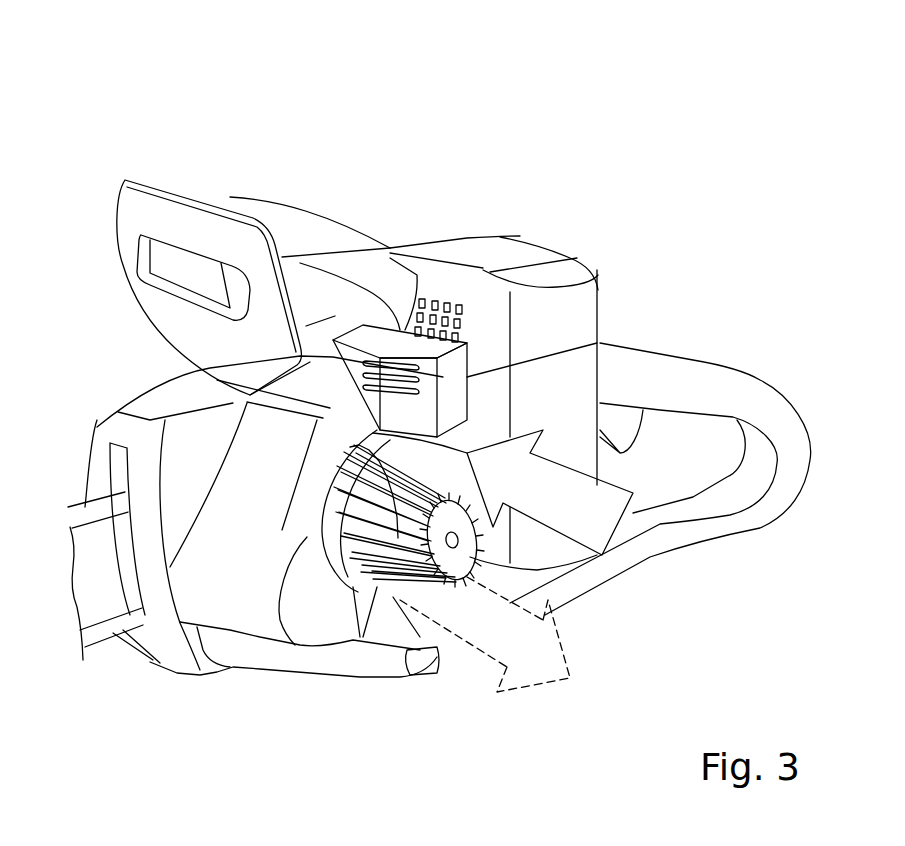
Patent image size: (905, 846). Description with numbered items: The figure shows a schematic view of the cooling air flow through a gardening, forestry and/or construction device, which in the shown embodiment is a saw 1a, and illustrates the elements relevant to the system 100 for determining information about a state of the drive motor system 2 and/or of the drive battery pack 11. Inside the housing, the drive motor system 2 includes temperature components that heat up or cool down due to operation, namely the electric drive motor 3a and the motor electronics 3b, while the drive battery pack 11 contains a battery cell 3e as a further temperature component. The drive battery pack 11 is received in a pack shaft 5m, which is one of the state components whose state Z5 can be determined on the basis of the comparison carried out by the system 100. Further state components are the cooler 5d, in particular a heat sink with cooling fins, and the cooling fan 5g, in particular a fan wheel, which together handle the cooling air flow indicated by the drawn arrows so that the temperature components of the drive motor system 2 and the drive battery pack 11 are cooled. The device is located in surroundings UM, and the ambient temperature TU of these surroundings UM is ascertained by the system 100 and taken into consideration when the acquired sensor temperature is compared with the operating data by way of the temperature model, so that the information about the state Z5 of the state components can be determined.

The system 100 is at (160, 153).
The saw 1a is at (233, 117).
The drive motor system 2 is at (505, 355).
The electric drive motor 3a is at (360, 560).
The motor electronics 3b is at (447, 300).
The battery cell 3e is at (570, 272).
The cooler 5d is at (383, 352).
The pack shaft 5m is at (465, 297).
The cooling fan 5g is at (400, 525).
The drive battery pack 11 is at (483, 268).
The state of a state component Z5 is at (520, 236).
The surroundings UM is at (732, 598).
The ambient temperature TU is at (727, 643).